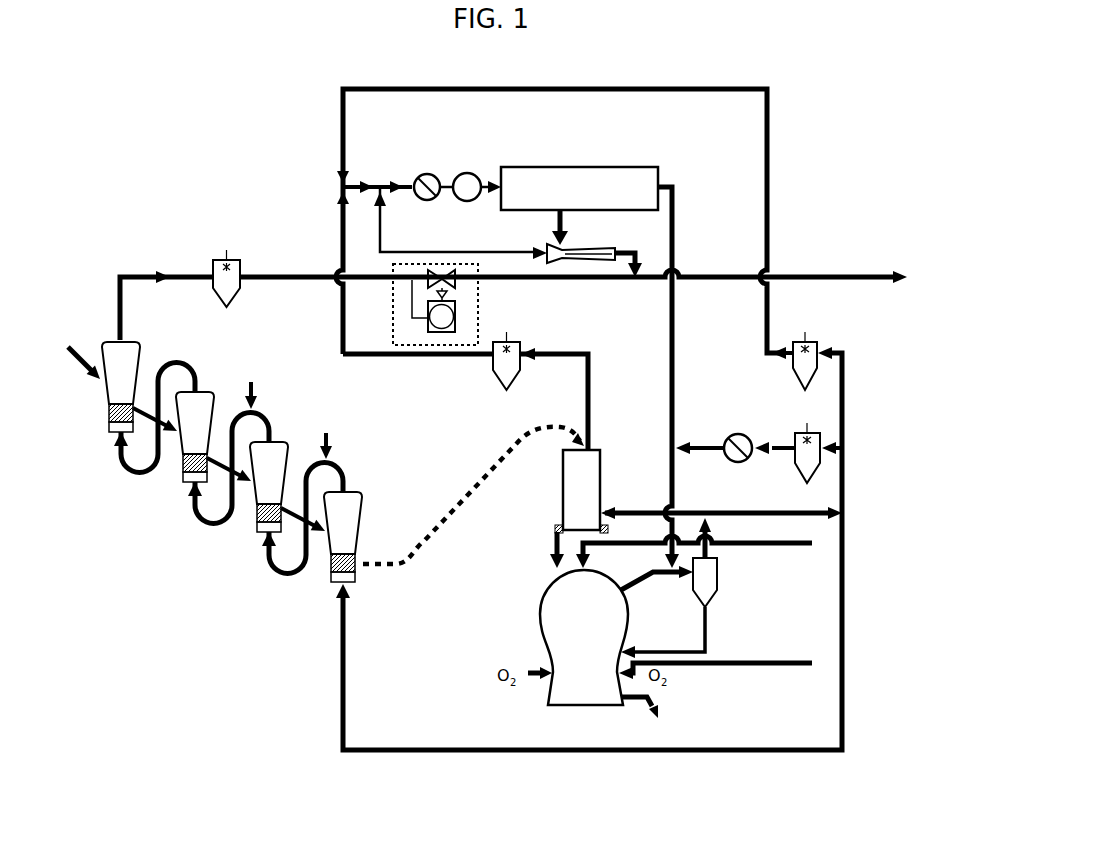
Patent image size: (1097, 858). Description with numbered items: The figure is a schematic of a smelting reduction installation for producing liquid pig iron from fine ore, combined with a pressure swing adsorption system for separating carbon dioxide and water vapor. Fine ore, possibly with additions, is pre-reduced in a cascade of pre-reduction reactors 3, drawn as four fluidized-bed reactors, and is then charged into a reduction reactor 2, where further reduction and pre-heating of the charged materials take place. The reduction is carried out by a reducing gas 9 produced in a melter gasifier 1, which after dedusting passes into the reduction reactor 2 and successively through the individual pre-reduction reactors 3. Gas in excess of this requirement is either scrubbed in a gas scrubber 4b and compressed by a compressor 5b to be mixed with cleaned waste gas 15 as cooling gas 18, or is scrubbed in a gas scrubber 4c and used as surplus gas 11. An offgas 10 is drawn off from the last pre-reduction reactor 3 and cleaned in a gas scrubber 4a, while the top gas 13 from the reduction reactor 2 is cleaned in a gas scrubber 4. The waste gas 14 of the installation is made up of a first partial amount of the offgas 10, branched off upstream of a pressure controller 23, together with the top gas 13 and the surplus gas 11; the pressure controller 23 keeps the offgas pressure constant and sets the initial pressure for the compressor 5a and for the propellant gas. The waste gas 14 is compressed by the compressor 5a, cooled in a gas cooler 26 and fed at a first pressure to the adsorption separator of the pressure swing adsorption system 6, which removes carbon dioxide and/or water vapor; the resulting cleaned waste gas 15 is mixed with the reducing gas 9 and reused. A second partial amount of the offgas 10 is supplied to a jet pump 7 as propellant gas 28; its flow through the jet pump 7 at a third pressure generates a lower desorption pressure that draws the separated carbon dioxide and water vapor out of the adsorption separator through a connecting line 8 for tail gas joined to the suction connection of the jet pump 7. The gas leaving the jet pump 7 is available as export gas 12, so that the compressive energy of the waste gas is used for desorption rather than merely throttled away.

The melter gasifier 1 is at (515, 622).
The reduction reactor 2 is at (550, 490).
The pre-reduction reactors 3 is at (200, 553).
The gas scrubber 4 is at (508, 350).
The gas scrubber 4a is at (223, 275).
The gas scrubber 4b is at (813, 460).
The gas scrubber 4c is at (813, 367).
The compressor 5a is at (427, 175).
The compressor 5b is at (747, 445).
The pressure swing adsorption system 6 is at (558, 187).
The jet pump 7 is at (588, 256).
The connecting line for tail gas 8 is at (565, 225).
The reducing gas 9 is at (630, 586).
The offgas 10 is at (145, 280).
The surplus gas 11 is at (770, 112).
The export gas 12 is at (800, 273).
The top gas 13 is at (373, 357).
The waste gas 14 is at (398, 180).
The cleaned waste gas 15 is at (676, 300).
The cooling gas 18 is at (693, 450).
The pressure controller 23 is at (480, 303).
The gas cooler 26 is at (470, 173).
The propellant gas 28 is at (423, 252).